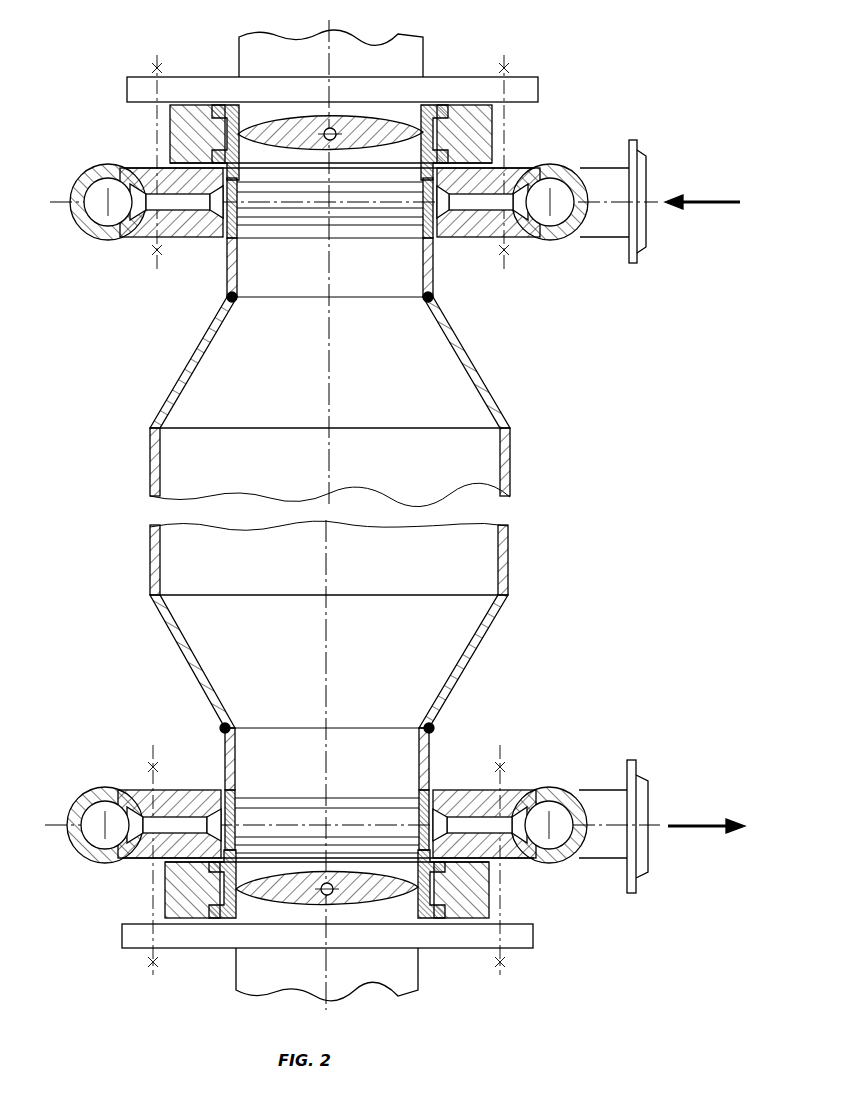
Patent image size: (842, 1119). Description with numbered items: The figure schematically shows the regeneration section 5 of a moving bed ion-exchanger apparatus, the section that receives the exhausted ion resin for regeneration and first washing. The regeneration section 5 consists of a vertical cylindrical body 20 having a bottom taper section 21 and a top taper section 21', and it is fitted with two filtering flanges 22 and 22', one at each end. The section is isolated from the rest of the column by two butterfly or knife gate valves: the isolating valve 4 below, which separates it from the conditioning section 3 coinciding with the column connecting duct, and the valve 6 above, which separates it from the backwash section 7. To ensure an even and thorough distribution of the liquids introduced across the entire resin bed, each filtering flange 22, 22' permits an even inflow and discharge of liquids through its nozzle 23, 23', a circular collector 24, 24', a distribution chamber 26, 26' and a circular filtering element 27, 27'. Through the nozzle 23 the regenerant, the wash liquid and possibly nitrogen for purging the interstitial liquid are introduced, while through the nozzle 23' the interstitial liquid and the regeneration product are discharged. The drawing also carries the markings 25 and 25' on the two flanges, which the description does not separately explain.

The conditioning section 3 is at (385, 970).
The isolating valve 4 is at (188, 890).
The regeneration section 5 is at (181, 558).
The butterfly or knife gate valve 6 is at (468, 145).
The backwash section 7 is at (403, 55).
The vertical cylindrical body 20 is at (503, 470).
The bottom taper section 21 is at (364, 362).
The top taper section 21' is at (366, 661).
The filtering flange 22 is at (146, 253).
The filtering flange 22' is at (535, 773).
The nozzle 23 is at (629, 241).
The nozzle 23' is at (643, 788).
The circular collector 24 is at (550, 253).
The circular collector 24' is at (574, 773).
The bore channel 25 is at (512, 253).
The lower bore channel 25' is at (144, 773).
The distribution chamber 26 is at (452, 260).
The distribution chamber 26' is at (199, 766).
The circular filtering element 27 is at (197, 260).
The circular filtering element 27' is at (469, 766).